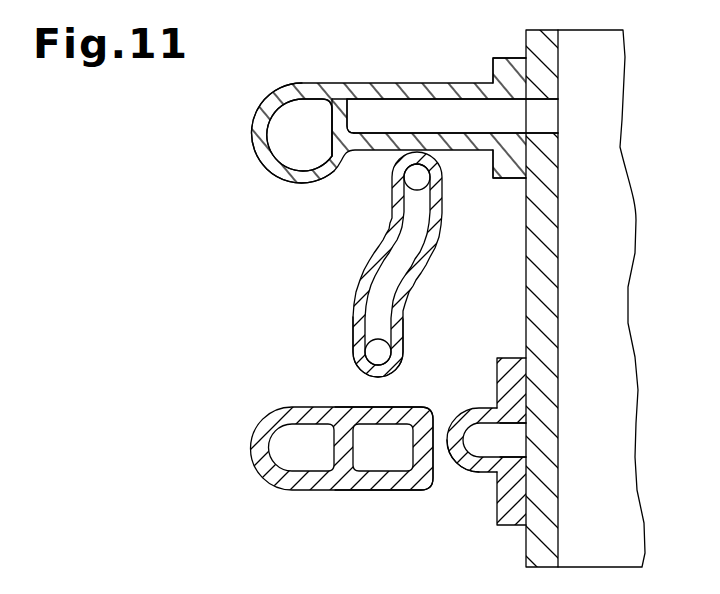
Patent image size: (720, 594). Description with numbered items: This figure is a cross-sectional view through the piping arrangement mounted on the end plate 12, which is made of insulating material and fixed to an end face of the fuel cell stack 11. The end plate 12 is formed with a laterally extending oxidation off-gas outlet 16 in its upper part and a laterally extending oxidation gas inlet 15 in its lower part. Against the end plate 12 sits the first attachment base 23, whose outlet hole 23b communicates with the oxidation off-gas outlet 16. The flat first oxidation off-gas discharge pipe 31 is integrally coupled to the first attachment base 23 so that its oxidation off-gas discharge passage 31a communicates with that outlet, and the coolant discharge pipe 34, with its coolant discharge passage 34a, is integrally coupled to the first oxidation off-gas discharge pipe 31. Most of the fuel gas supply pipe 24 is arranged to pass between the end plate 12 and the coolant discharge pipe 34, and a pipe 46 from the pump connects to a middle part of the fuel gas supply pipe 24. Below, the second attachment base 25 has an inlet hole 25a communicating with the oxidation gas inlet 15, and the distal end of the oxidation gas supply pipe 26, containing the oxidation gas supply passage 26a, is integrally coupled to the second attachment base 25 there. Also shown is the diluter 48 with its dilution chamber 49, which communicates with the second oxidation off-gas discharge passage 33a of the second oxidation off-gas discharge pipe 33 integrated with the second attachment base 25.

The fuel cell stack 11 is at (619, 42).
The end plate 12 is at (550, 72).
The oxidation gas inlet 15 is at (558, 452).
The oxidation off-gas outlet 16 is at (548, 128).
The first attachment base 23 is at (502, 70).
The outlet hole 23b is at (509, 128).
The fuel gas supply pipe 24 is at (395, 185).
The second attachment base 25 is at (517, 528).
The inlet hole 25a is at (530, 428).
The oxidation gas supply pipe 26 is at (452, 420).
The oxidation gas supply passage 26a is at (470, 466).
The first oxidation off-gas discharge pipe 31 is at (428, 82).
The oxidation off-gas discharge passage 31a is at (372, 110).
The second oxidation off-gas discharge pipe 33 is at (250, 445).
The second oxidation off-gas discharge passage 33a is at (298, 463).
The coolant discharge pipe 34 is at (252, 137).
The coolant discharge passage 34a is at (290, 116).
The pipe 46 is at (358, 328).
The diluter 48 is at (382, 485).
The dilution chamber 49 is at (396, 439).